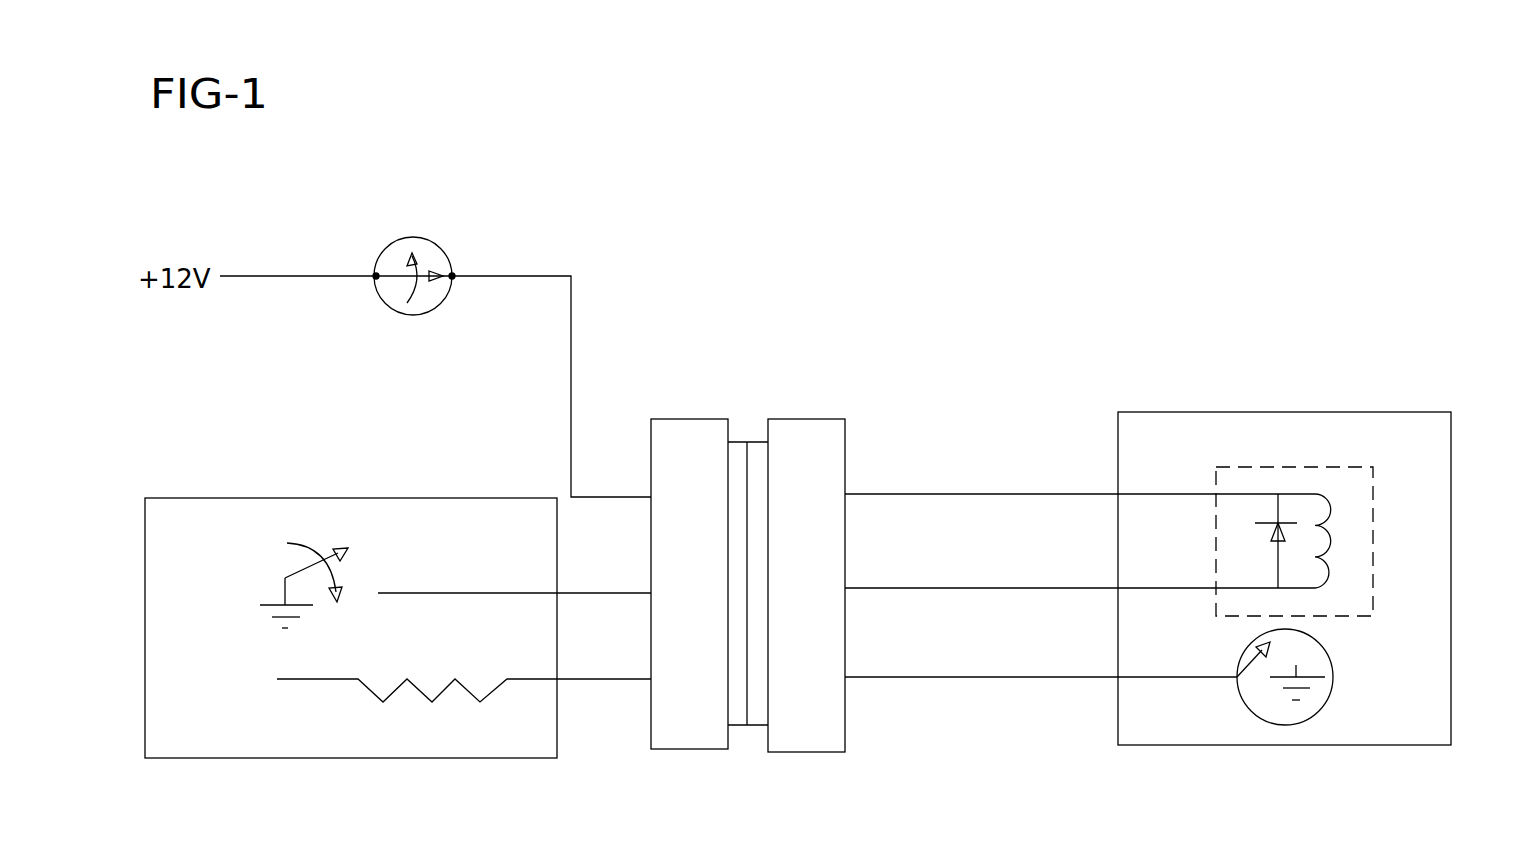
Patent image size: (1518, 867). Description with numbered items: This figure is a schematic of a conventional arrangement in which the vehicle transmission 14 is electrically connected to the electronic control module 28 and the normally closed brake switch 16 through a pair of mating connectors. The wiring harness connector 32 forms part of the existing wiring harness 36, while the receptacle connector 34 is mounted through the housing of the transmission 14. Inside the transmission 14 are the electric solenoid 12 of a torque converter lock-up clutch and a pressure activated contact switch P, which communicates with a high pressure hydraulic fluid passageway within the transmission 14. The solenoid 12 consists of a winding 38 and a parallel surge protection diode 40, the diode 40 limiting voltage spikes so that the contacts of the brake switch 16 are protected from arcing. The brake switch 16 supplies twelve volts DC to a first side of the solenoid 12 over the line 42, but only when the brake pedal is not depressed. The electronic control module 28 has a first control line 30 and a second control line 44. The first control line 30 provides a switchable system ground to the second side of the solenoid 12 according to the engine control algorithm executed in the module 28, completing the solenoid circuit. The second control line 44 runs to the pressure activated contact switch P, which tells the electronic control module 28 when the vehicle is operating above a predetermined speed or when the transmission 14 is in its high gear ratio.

The electric solenoid 12 is at (1300, 467).
The vehicle transmission 14 is at (1180, 412).
The brake switch 16 is at (440, 244).
The electronic control module 28 is at (558, 718).
The first control line 30 is at (580, 592).
The wiring harness connector 32 is at (697, 418).
The receptacle connector 34 is at (812, 418).
The wiring harness 36 is at (590, 441).
The winding 38 is at (1331, 522).
The surge protection diode 40 is at (1243, 530).
The line 42 is at (530, 276).
The second control line 44 is at (585, 678).
The pressure activated contact switch P is at (1334, 673).